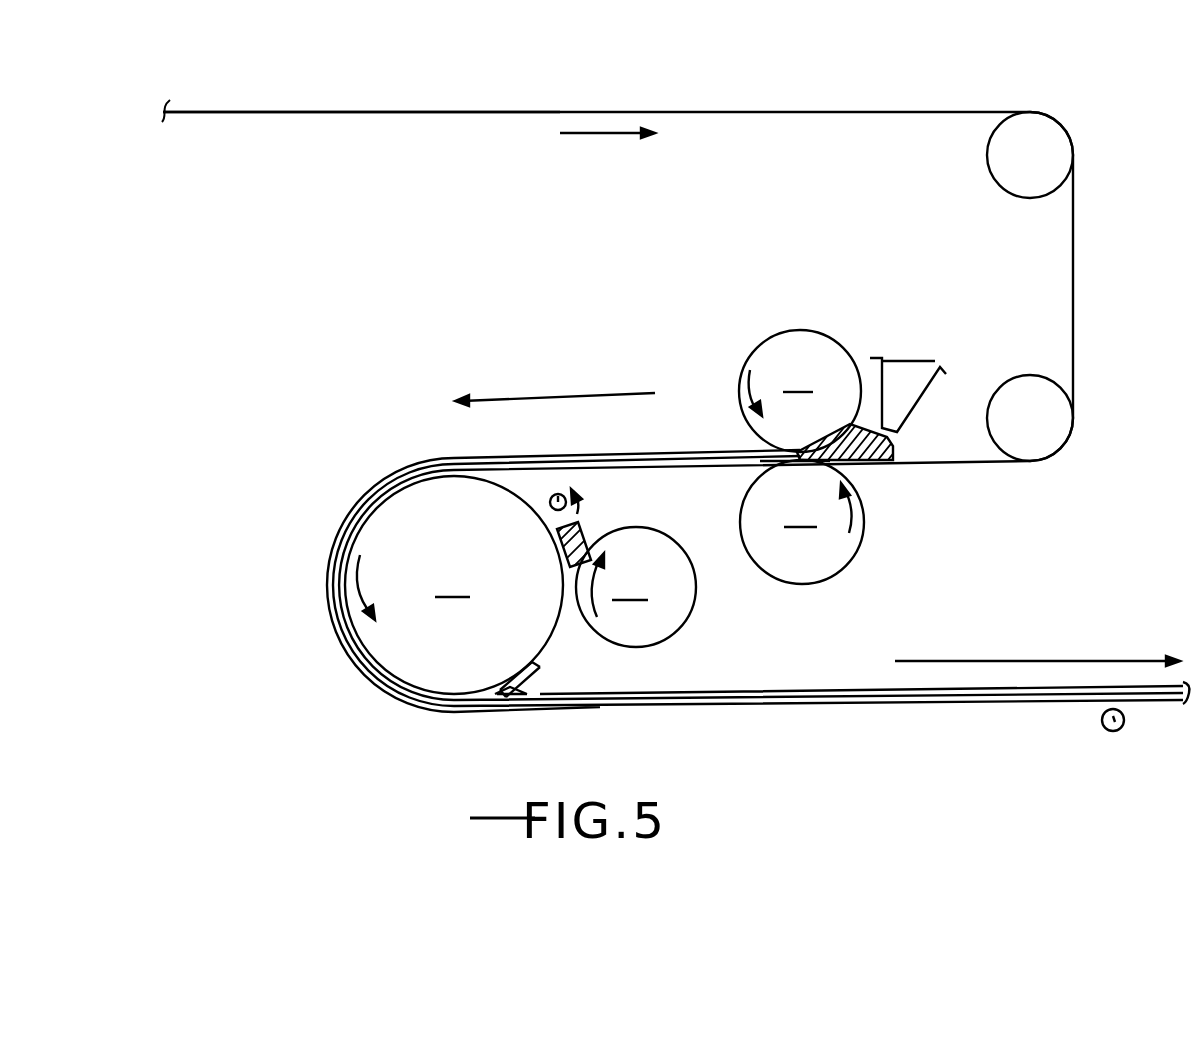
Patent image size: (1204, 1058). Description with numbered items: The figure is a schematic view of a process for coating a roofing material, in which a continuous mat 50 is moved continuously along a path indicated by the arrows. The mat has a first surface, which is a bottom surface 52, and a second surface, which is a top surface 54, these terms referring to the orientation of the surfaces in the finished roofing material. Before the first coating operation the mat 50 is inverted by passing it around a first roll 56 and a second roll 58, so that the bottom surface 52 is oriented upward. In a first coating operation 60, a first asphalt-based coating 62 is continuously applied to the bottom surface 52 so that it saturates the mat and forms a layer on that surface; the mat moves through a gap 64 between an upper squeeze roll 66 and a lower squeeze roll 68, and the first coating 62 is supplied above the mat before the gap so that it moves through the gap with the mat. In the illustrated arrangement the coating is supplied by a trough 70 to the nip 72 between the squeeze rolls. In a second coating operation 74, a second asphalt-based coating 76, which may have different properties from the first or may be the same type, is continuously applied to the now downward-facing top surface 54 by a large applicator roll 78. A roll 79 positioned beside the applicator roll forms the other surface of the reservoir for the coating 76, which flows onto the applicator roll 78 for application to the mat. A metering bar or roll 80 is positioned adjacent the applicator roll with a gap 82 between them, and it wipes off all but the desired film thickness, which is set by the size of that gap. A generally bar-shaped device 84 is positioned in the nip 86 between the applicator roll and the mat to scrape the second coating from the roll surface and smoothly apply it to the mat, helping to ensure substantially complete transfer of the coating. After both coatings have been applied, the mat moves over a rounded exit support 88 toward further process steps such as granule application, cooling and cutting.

The continuous mat 50 is at (278, 100).
The bottom surface 52 is at (340, 113).
The top surface 54 is at (348, 112).
The first roll 56 is at (1020, 150).
The second roll 58 is at (1016, 408).
The first coating operation 60 is at (700, 365).
The first asphalt-based coating 62 is at (855, 470).
The gap 64 is at (748, 463).
The upper squeeze roll 66 is at (800, 391).
The lower squeeze roll 68 is at (802, 522).
The trough 70 is at (903, 385).
The nip 72 is at (870, 456).
The second coating operation 74 is at (330, 485).
The second asphalt-based coating 76 is at (580, 527).
The applicator roll 78 is at (454, 585).
The roll 79 is at (636, 587).
The metering roll 80 is at (552, 496).
The gap 82 is at (535, 487).
The scraping device 84 is at (542, 670).
The nip 86 is at (550, 656).
The rounded exit support 88 is at (1110, 731).